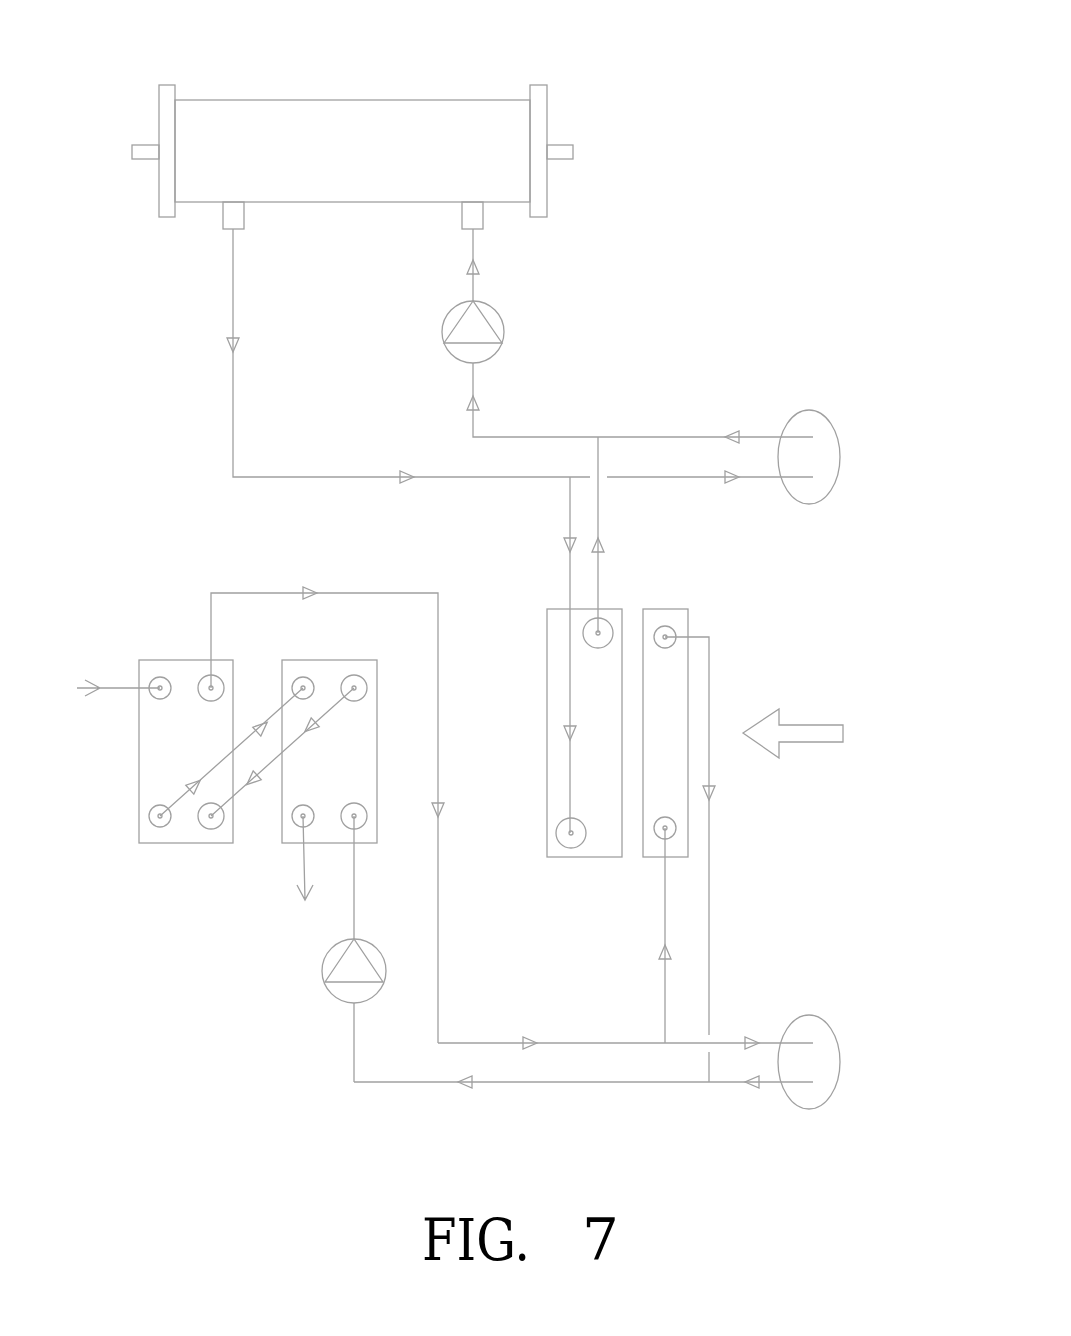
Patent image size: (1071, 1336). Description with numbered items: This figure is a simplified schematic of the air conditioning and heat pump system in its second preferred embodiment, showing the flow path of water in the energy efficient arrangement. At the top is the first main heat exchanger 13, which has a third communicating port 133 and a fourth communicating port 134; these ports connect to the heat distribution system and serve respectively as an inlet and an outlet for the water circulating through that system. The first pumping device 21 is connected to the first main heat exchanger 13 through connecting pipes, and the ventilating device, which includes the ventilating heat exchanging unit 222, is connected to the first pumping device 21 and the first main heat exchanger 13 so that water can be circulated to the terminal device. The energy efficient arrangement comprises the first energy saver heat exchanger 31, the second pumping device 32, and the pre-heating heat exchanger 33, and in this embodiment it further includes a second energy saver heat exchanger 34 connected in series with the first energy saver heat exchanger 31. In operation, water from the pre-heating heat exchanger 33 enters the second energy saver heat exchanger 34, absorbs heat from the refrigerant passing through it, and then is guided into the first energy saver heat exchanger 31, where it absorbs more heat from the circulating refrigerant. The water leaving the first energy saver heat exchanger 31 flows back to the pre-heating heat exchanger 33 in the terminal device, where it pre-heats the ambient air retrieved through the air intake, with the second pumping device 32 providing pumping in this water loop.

The first main heat exchanger 13 is at (343, 138).
The third communicating port 133 is at (205, 229).
The fourth communicating port 134 is at (500, 221).
The first pumping device 21 is at (479, 334).
The pre-heating heat exchanger 33 is at (665, 693).
The ventilating heat exchanging unit 222 is at (600, 777).
The first energy saver heat exchanger 31 is at (148, 735).
The second energy saver heat exchanger 34 is at (302, 778).
The second pumping device 32 is at (349, 965).